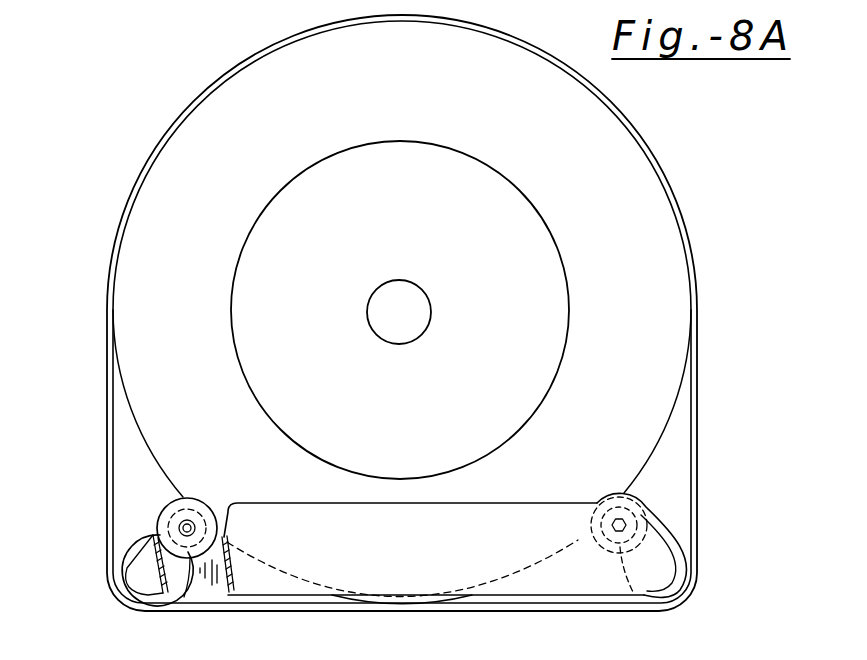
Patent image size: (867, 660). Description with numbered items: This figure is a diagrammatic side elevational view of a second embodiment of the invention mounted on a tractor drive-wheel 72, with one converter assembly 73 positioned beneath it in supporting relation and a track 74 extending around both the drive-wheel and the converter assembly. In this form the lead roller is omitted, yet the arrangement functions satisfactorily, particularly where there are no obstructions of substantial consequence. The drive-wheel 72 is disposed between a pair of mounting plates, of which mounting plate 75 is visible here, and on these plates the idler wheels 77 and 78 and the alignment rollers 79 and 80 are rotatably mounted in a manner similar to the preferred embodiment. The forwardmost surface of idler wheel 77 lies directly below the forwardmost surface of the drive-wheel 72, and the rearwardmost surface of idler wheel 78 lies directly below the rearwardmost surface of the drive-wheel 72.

The tractor drive-wheel 72 is at (403, 103).
The converter assembly 73 is at (586, 485).
The track 74 is at (697, 433).
The mounting plate 75 is at (419, 561).
The idler wheel 77 is at (670, 530).
The idler wheel 78 is at (132, 540).
The alignment roller 79 is at (578, 540).
The alignment roller 80 is at (226, 540).